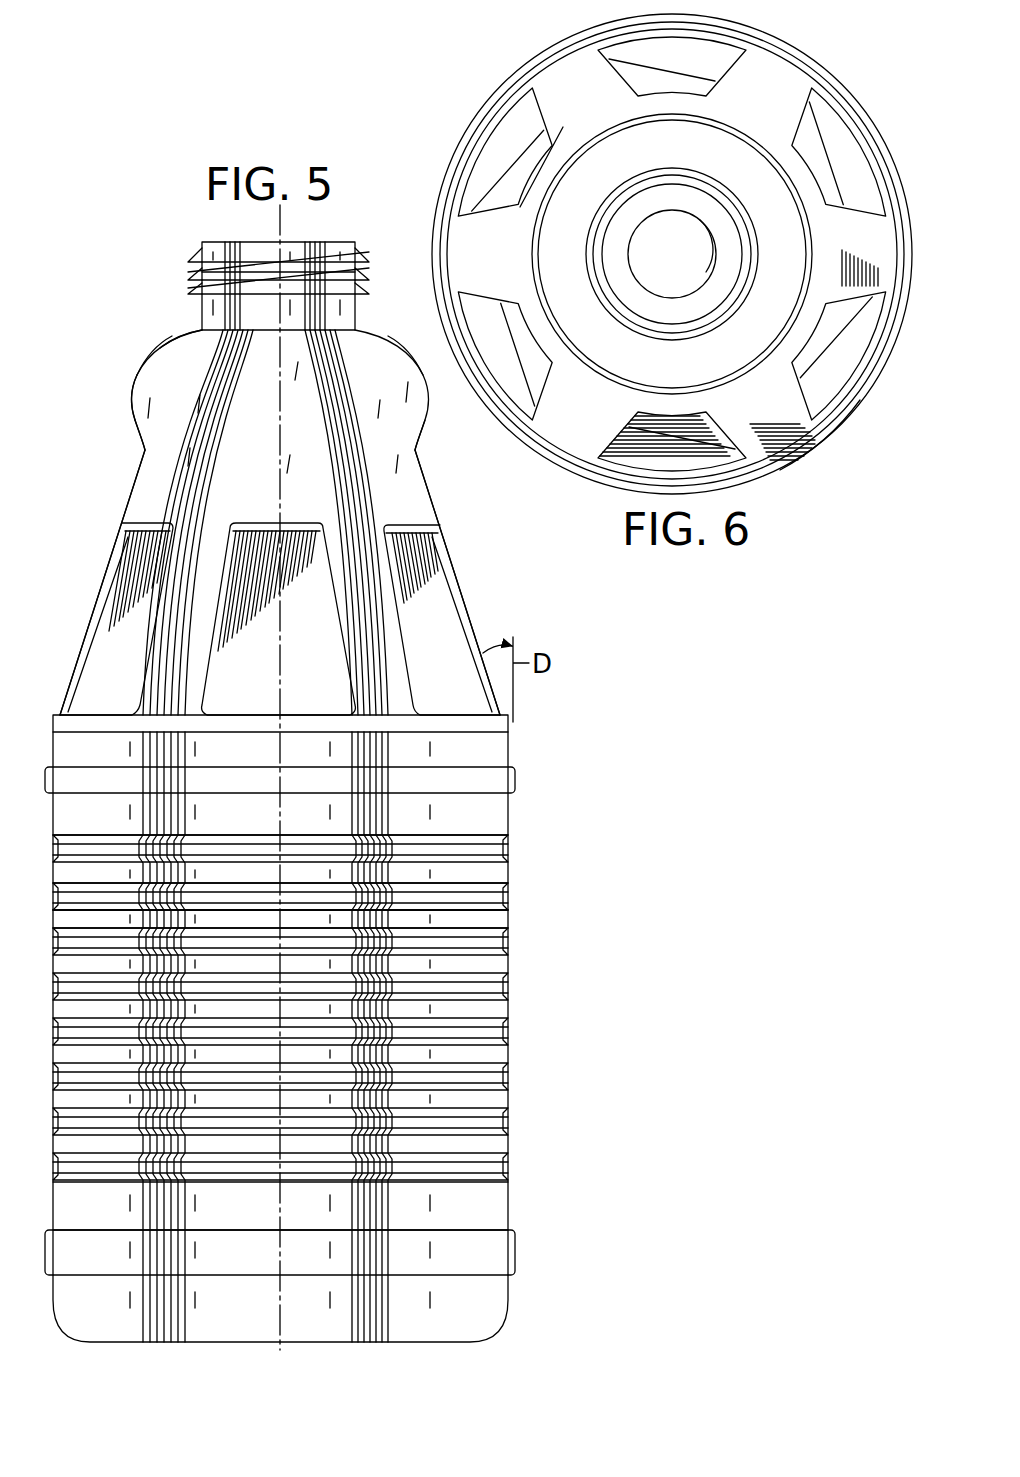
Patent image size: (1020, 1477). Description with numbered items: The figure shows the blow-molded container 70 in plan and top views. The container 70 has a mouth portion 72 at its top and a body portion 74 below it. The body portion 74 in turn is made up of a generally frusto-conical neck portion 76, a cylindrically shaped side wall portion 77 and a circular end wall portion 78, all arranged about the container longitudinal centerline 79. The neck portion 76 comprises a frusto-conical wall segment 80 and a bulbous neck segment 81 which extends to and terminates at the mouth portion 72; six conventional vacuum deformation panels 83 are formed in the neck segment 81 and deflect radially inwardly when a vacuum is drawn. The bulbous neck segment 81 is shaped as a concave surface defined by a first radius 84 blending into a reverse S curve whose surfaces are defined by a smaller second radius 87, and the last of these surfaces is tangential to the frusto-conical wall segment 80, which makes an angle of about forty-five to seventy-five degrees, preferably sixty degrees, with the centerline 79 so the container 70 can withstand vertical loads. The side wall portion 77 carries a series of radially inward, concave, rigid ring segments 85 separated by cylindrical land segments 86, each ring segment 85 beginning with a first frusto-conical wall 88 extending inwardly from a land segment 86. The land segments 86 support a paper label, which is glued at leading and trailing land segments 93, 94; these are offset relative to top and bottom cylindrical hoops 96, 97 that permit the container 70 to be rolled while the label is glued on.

In FIG. 5, the container 70 is at (125, 292).
In FIG. 6, the container 70 is at (465, 92).
In FIG. 5, the mouth portion 72 is at (199, 241).
In FIG. 6, the mouth portion 72 is at (669, 170).
In FIG. 5, the body portion 74 is at (585, 815).
In FIG. 5, the neck portion 76 is at (460, 575).
In FIG. 6, the neck portion 76 is at (567, 78).
In FIG. 5, the side wall portion 77 is at (512, 1005).
In FIG. 6, the side wall portion 77 is at (831, 442).
In FIG. 5, the end wall portion 78 is at (322, 1343).
In FIG. 5, the container longitudinal centerline 79 is at (278, 418).
In FIG. 5, the frusto-conical wall segment 80 is at (128, 488).
In FIG. 6, the frusto-conical wall segment 80 is at (775, 78).
In FIG. 5, the bulbous neck segment 81 is at (128, 370).
In FIG. 6, the bulbous neck segment 81 is at (540, 185).
In FIG. 5, the vacuum deformation panels 83 is at (130, 612).
In FIG. 6, the vacuum deformation panels 83 is at (705, 62).
In FIG. 5, the first radius 84 is at (183, 347).
In FIG. 5, the ring segments 85 is at (432, 372).
In FIG. 5, the land segments 86 is at (141, 377).
In FIG. 5, the second radius 87 is at (418, 436).
In FIG. 5, the first frusto-conical wall 88 is at (133, 421).
In FIG. 5, the leading land segment 93 is at (512, 810).
In FIG. 5, the trailing land segment 94 is at (512, 1228).
In FIG. 5, the top cylindrical hoop 96 is at (516, 778).
In FIG. 5, the bottom cylindrical hoop 97 is at (515, 1262).